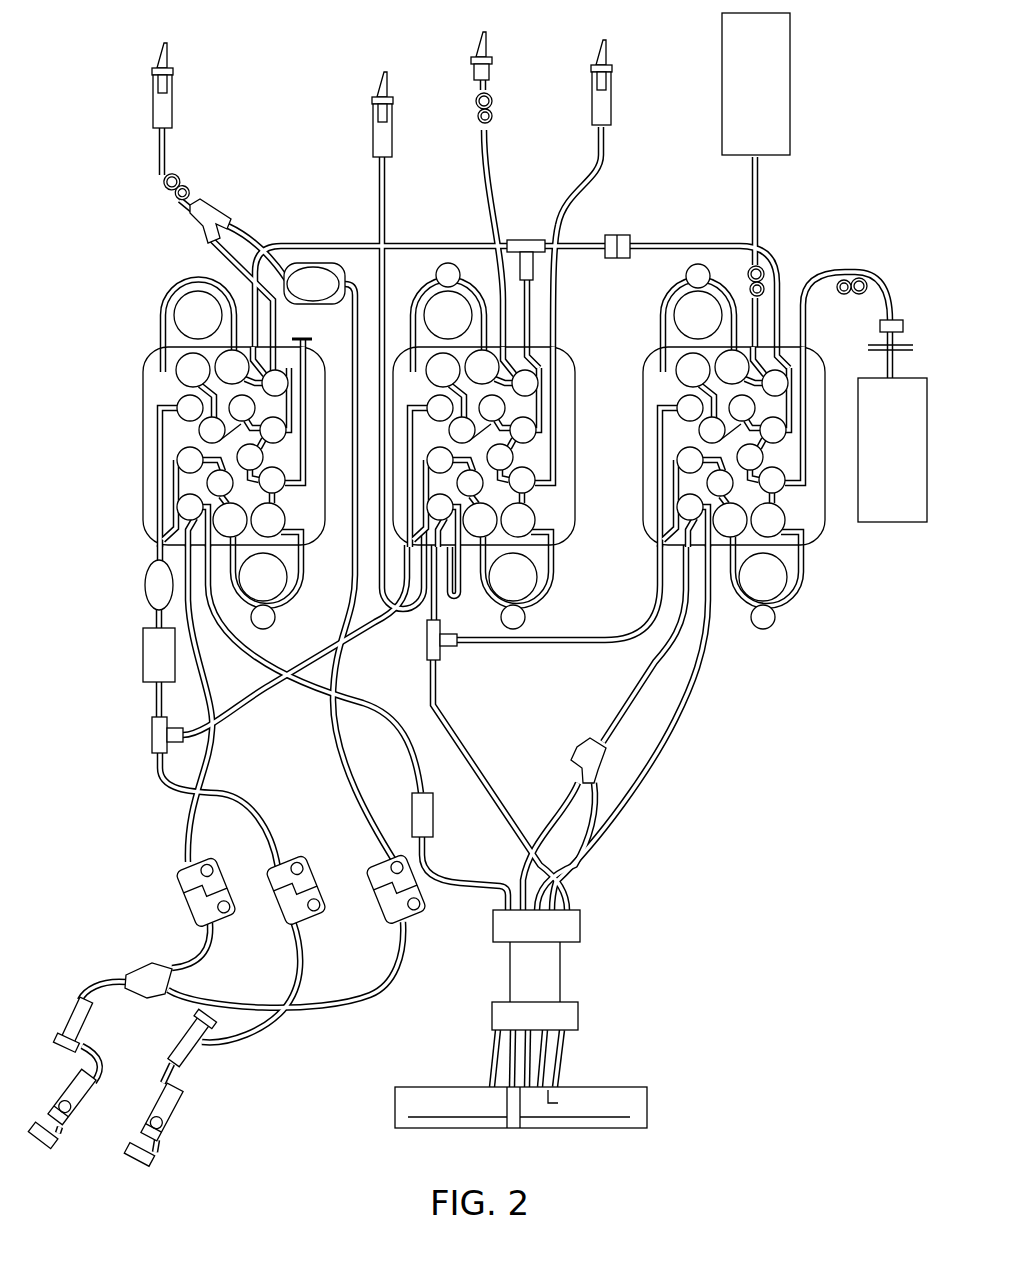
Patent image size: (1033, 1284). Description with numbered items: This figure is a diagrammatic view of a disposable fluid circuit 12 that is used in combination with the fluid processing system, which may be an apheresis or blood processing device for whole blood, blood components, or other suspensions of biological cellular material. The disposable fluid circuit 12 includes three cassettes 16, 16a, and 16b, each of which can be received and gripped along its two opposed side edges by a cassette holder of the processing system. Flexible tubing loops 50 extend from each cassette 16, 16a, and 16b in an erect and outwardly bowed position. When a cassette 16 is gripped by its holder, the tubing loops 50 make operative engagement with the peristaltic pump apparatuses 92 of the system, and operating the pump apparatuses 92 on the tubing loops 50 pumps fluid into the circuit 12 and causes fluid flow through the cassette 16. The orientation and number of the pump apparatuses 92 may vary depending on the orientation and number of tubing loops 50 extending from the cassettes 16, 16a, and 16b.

The disposable fluid circuit 12 is at (477, 589).
The cassette 16 is at (142, 438).
The cassette 16a is at (577, 410).
The cassette 16b is at (642, 480).
The tubing loop 50 is at (165, 330).
The peristaltic pumping apparatus 92 is at (183, 302).